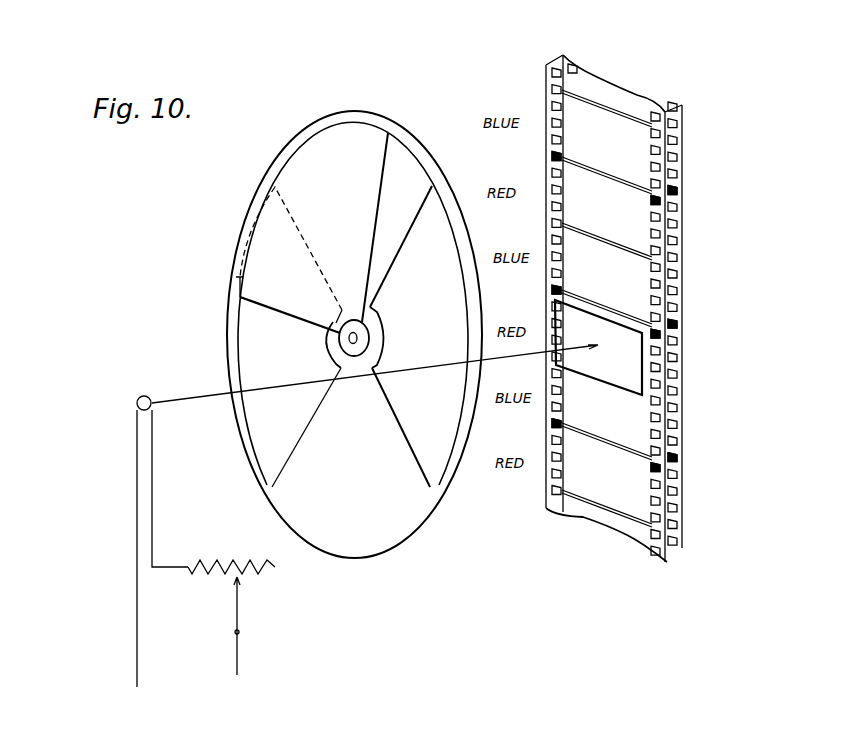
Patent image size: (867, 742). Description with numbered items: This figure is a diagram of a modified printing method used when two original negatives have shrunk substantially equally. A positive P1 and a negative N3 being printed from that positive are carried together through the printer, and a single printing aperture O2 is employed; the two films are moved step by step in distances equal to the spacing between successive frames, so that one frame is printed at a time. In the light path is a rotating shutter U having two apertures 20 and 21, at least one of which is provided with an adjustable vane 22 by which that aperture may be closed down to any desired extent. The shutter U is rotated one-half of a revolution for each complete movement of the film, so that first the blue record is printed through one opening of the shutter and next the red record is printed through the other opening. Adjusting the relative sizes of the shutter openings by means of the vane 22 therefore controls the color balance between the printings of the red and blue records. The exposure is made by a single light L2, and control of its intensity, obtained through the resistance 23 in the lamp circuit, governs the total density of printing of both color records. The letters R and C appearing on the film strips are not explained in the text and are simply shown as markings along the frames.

The shutter aperture 20 is at (404, 336).
The shutter aperture 21 is at (290, 335).
The adjustable vane 22 is at (312, 228).
The shutter U is at (312, 427).
The resistance 23 is at (215, 560).
The light L2 is at (149, 397).
The positive P1 is at (539, 93).
The negative N3 is at (703, 128).
The frame separator line R is at (553, 156).
The sprocket hole marker C is at (553, 156).
The printing aperture O2 is at (641, 376).